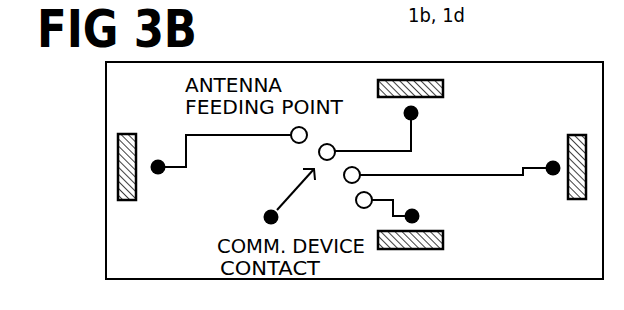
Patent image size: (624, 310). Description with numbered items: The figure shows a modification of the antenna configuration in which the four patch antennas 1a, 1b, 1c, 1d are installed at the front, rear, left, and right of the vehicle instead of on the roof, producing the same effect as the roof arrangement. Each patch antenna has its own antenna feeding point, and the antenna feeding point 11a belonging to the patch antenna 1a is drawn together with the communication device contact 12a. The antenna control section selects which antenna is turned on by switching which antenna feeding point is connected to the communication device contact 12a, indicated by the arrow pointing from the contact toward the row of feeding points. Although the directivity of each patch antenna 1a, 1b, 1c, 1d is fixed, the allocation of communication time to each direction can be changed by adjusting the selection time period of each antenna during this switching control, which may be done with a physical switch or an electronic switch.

The patch antenna 1a is at (136, 188).
The patch antenna 1b is at (445, 86).
The patch antenna 1c is at (573, 134).
The patch antenna 1d is at (446, 236).
The antenna feeding point 11a is at (158, 160).
The contact of the communication device 12a is at (265, 221).